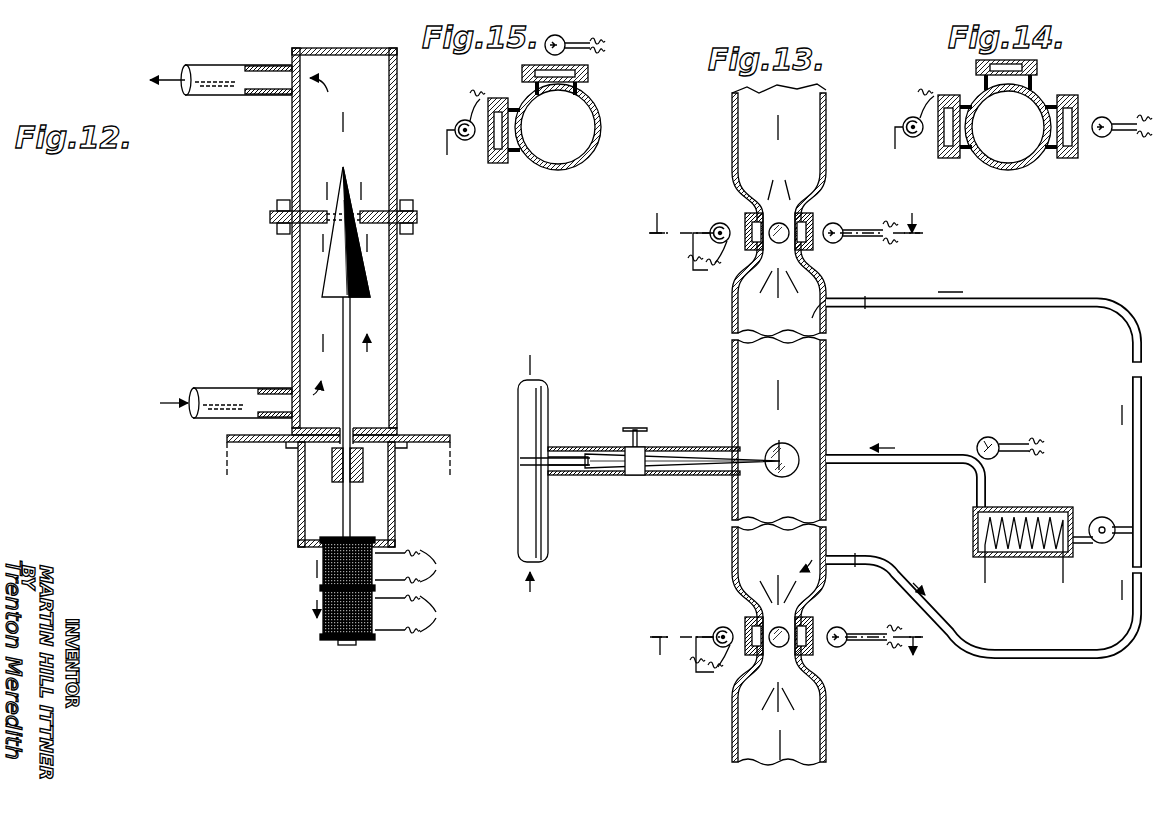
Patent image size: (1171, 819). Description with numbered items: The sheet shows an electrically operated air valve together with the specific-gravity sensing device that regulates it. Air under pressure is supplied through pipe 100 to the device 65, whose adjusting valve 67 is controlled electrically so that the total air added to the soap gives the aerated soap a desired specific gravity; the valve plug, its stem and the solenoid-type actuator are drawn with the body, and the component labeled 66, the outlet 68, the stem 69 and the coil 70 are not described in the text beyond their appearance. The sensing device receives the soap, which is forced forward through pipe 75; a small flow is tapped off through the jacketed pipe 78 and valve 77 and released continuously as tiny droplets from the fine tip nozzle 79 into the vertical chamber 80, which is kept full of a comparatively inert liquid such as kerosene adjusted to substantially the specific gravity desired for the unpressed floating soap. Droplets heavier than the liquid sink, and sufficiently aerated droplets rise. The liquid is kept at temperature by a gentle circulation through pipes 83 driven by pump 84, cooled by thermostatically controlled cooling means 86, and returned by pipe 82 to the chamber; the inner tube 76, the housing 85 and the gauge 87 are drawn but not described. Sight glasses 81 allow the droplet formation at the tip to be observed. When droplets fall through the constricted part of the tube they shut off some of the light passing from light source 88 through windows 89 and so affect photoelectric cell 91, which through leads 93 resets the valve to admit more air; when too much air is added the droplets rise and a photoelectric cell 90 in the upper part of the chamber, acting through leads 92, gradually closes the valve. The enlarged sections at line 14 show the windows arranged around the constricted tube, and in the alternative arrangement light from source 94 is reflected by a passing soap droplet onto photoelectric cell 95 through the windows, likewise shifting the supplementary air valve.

In FIG. 12, the device 65 is at (292, 301).
In FIG. 12, the cone valve 66 is at (355, 212).
In FIG. 12, the adjusting valve 67 is at (367, 277).
In FIG. 12, the outlet pipe 68 is at (218, 72).
In FIG. 12, the valve stem 69 is at (345, 497).
In FIG. 12, the solenoid coil 70 is at (323, 584).
In FIG. 12, the pipe 100 is at (224, 392).
In FIG. 12, the leads 92 is at (422, 564).
In FIG. 13, the leads 92 is at (692, 281).
In FIG. 12, the leads 93 is at (422, 614).
In FIG. 13, the leads 93 is at (697, 681).
In FIG. 13, the pipe 75 is at (548, 540).
In FIG. 13, the inner tube 76 is at (570, 458).
In FIG. 13, the valve 77 is at (636, 467).
In FIG. 13, the jacketed pipe 78 is at (662, 447).
In FIG. 13, the fine tip nozzle 79 is at (772, 470).
In FIG. 13, the vertical chamber 80 is at (803, 405).
In FIG. 13, the sight glasses 81 is at (790, 452).
In FIG. 13, the pipe 82 is at (912, 456).
In FIG. 13, the pipes 83 is at (947, 307).
In FIG. 13, the pump 84 is at (1105, 518).
In FIG. 13, the heater housing 85 is at (1023, 508).
In FIG. 13, the cooling means 86 is at (1023, 560).
In FIG. 13, the gauge 87 is at (992, 438).
In FIG. 14, the light source 88 is at (1102, 137).
In FIG. 13, the light source 88 is at (840, 228).
In FIG. 15, the windows 89 is at (582, 90).
In FIG. 14, the windows 89 is at (1020, 62).
In FIG. 13, the windows 89 is at (748, 214).
In FIG. 14, the photocell 90 is at (905, 118).
In FIG. 13, the photocell 90 is at (716, 222).
In FIG. 13, the photoelectric cell 91 is at (726, 628).
In FIG. 15, the light source 94 is at (545, 48).
In FIG. 15, the photoelectric cell 95 is at (456, 122).
In FIG. 13, the section 14— 14 is at (785, 440).